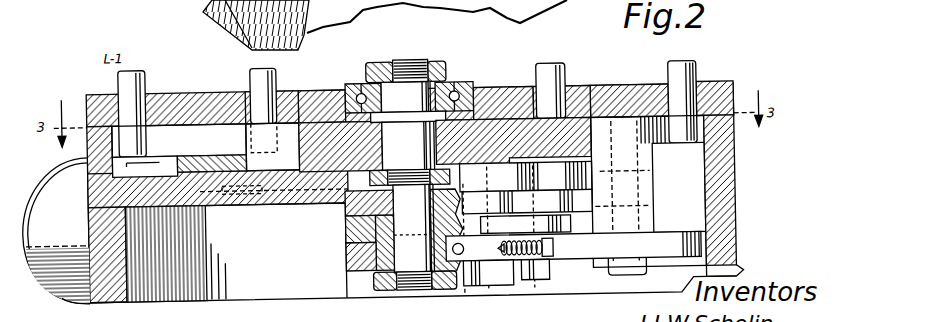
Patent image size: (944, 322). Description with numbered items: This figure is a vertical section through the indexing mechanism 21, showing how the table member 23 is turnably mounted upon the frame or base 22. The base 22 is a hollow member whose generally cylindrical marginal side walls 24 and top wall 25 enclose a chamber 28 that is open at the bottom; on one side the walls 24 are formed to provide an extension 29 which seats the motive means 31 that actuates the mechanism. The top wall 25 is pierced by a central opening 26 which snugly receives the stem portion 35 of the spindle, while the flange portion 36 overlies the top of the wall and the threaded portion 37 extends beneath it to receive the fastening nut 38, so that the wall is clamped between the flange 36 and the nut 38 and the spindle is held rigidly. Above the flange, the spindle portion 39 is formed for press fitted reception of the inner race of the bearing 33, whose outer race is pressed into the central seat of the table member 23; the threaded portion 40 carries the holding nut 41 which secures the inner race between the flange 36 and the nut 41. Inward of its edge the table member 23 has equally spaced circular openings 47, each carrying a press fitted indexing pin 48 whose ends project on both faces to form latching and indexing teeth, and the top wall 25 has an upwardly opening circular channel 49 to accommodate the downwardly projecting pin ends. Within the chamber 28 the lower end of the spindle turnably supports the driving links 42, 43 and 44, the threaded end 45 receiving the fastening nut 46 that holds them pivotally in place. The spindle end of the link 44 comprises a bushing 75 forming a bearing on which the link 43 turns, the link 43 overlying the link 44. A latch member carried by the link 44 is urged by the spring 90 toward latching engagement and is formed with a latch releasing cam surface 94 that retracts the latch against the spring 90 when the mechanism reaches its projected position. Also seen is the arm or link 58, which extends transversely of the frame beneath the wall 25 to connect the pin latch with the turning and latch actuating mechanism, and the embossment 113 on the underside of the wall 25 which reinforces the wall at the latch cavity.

The indexing mechanism 21 is at (93, 84).
The indexing pin 48 is at (148, 78).
The circular openings 47 is at (285, 88).
The top wall 25 is at (318, 87).
The bearing 33 is at (362, 81).
The spindle portion 39 is at (398, 59).
The threaded portion 40 is at (415, 63).
The holding nut 41 is at (448, 81).
The fastening nut 38 is at (483, 97).
The table member 23 is at (620, 91).
The flange portion 36 is at (396, 124).
The spindle stem portion 35 is at (418, 145).
The central opening 26 is at (438, 144).
The driving link 42 is at (345, 197).
The threaded portion 37 is at (406, 190).
The bushing 75 is at (412, 232).
The driving link 43 is at (345, 232).
The driving link 44 is at (345, 254).
The fastening nut 46 is at (372, 279).
The threaded portion 45 is at (420, 281).
The spring 90 is at (484, 268).
The latch releasing cam surface 94 is at (549, 286).
The circular channel 49 is at (132, 161).
The embossment 113 is at (246, 203).
The arm or link 58 is at (248, 193).
The chamber 28 is at (182, 253).
The extension 29 is at (55, 231).
The motive means 31 is at (64, 294).
The marginal side walls 24 is at (734, 196).
The frame or base 22 is at (748, 268).